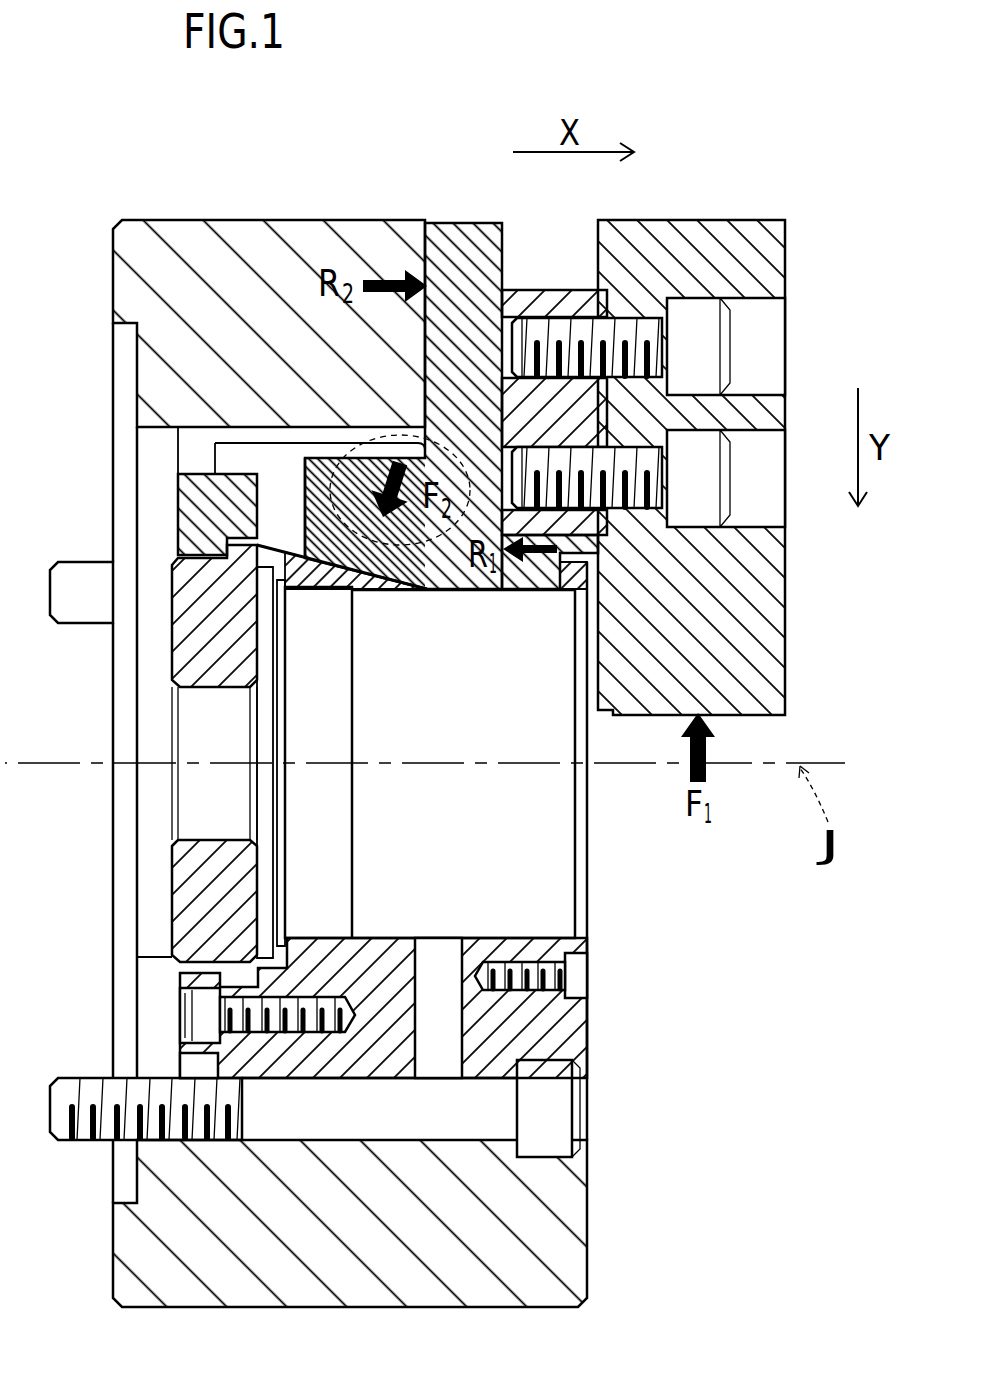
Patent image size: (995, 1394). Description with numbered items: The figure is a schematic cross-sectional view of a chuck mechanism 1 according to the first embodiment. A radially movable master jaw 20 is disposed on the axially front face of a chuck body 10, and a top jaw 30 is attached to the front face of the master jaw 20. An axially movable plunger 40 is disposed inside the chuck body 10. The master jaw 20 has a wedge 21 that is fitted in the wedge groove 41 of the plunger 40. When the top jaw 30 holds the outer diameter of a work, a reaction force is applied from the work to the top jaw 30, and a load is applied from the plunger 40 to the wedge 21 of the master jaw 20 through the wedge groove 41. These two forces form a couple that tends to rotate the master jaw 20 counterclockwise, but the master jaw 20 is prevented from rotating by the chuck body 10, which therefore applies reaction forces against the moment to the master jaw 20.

The chuck mechanism 1 is at (156, 184).
The chuck body 10 is at (253, 240).
The master jaw 20 is at (460, 272).
The wedge 21 is at (343, 553).
The top jaw 30 is at (728, 248).
The plunger 40 is at (310, 975).
The wedge groove 41 is at (360, 516).